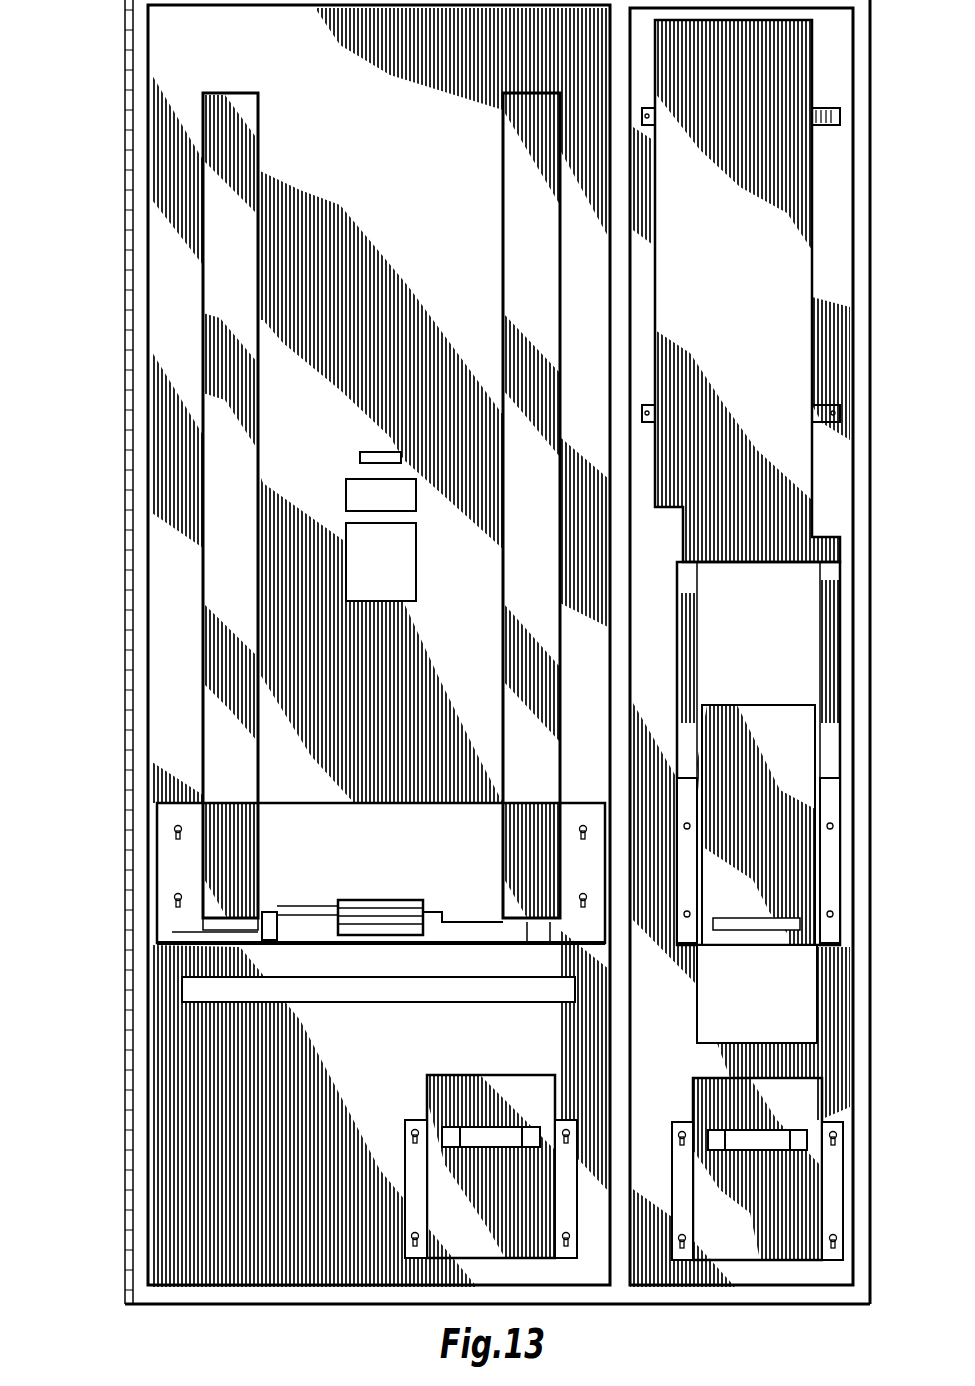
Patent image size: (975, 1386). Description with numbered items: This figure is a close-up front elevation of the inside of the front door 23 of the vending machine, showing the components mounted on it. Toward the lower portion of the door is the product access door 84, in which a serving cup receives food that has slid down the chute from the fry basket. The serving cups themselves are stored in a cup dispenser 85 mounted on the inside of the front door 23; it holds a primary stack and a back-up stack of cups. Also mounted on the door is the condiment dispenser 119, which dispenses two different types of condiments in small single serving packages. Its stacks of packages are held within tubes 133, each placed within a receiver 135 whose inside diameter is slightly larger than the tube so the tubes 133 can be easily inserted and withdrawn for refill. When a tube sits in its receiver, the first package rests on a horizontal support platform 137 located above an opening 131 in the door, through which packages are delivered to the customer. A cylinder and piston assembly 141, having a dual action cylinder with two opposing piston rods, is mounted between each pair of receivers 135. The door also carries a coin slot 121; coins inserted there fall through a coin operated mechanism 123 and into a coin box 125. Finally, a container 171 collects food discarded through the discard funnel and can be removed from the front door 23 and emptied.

The front door 23 is at (195, 48).
The product access door 84 is at (765, 882).
The cup dispenser 85 is at (765, 230).
The condiment dispenser 119 is at (116, 950).
The coin slot 121 is at (362, 457).
The coin operated mechanism 123 is at (352, 498).
The coin box 125 is at (412, 580).
The opening 131 is at (190, 990).
The tube 133 is at (518, 243).
The receiver 135 is at (515, 843).
The horizontal support platform 137 is at (300, 950).
The cylinder and piston assembly 141 is at (378, 880).
The container 171 is at (765, 1200).